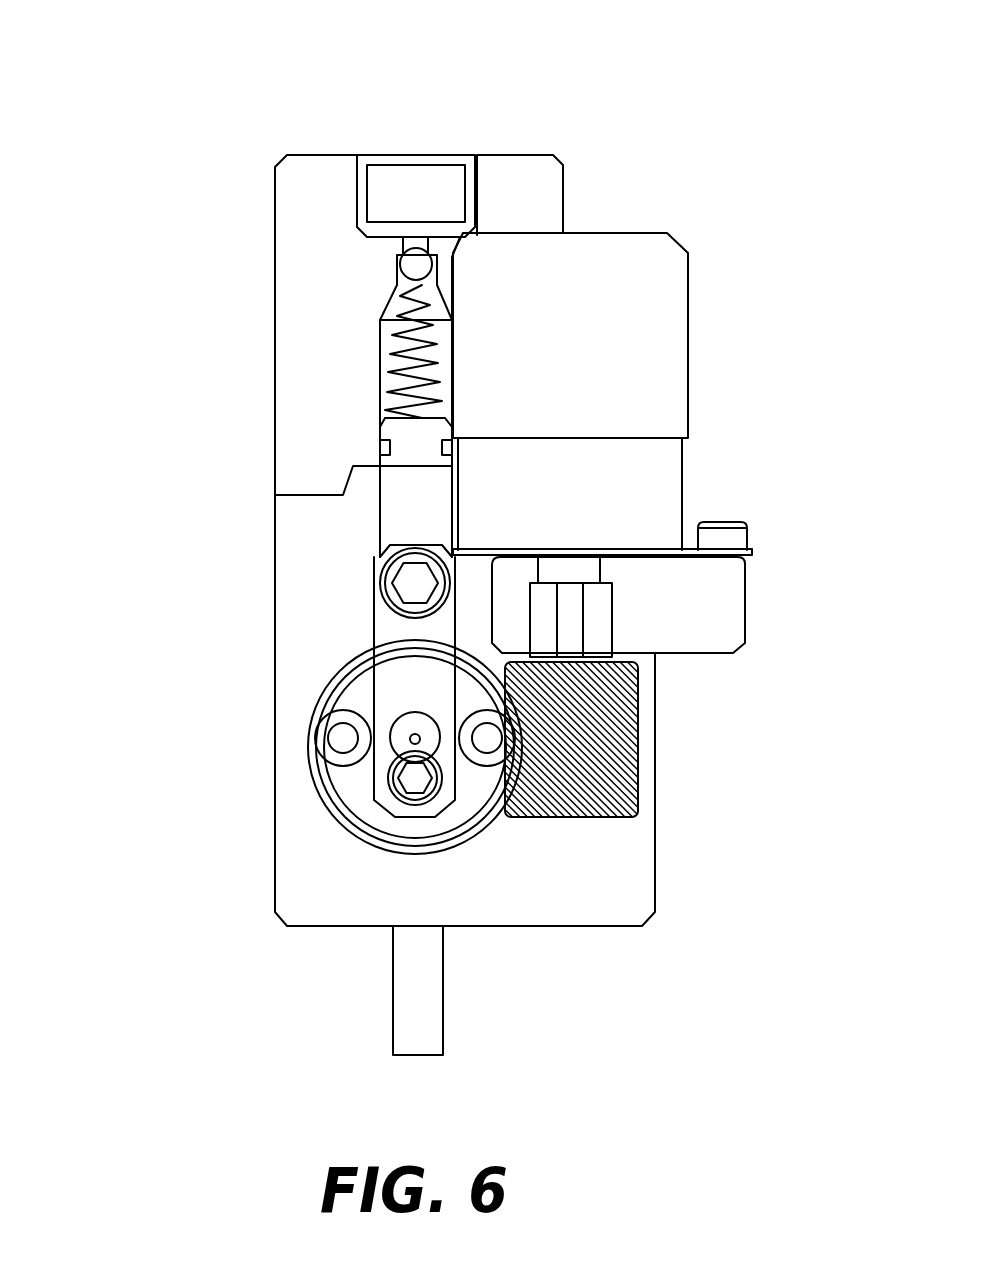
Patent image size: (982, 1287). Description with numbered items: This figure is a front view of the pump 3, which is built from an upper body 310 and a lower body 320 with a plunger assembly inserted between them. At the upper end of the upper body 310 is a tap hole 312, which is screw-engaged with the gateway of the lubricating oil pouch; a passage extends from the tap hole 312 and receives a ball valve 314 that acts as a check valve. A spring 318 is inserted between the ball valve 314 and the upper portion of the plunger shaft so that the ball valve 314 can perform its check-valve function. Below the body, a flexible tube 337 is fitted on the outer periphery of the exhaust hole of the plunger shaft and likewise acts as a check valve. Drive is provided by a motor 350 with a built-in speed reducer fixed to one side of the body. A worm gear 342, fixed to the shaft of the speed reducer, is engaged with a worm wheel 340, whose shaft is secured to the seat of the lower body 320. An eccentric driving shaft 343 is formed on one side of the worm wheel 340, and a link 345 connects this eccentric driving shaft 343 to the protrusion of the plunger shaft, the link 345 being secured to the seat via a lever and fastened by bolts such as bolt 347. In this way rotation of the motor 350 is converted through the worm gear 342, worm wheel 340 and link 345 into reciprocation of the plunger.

The pump 3 is at (586, 154).
The upper body 310 is at (308, 453).
The tap hole 312 is at (378, 177).
The ball valve 314 is at (397, 258).
The spring 318 is at (393, 357).
The lower body 320 is at (293, 685).
The flexible tube 337 is at (413, 1015).
The worm wheel 340 is at (337, 807).
The worm gear 342 is at (620, 763).
The eccentric driving shaft 343 is at (433, 800).
The link 345 is at (400, 655).
The bolt 347 is at (423, 582).
The motor 350 is at (680, 325).